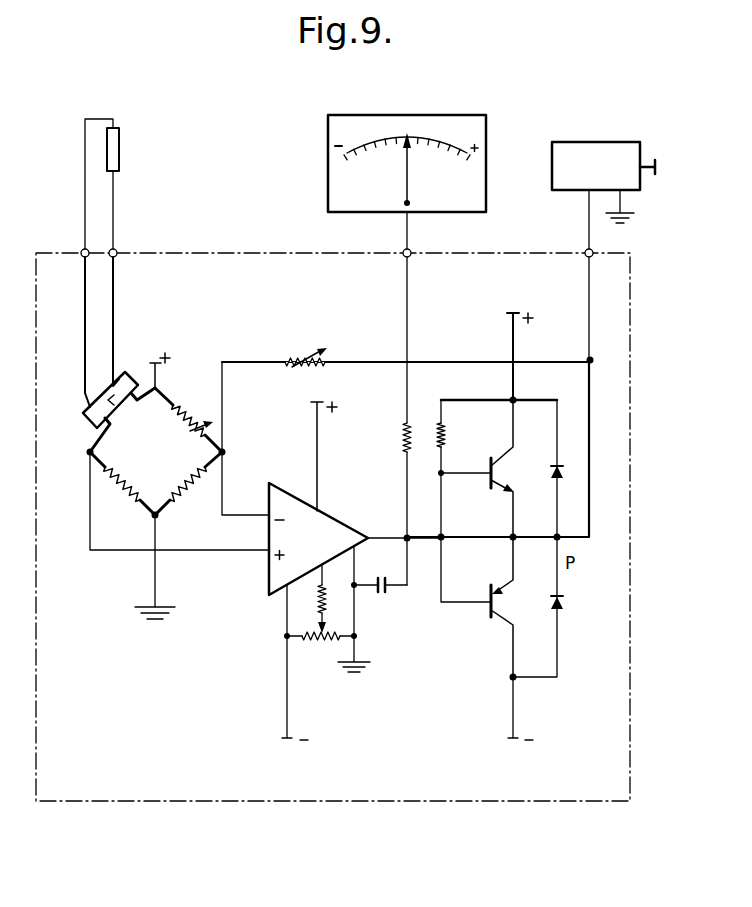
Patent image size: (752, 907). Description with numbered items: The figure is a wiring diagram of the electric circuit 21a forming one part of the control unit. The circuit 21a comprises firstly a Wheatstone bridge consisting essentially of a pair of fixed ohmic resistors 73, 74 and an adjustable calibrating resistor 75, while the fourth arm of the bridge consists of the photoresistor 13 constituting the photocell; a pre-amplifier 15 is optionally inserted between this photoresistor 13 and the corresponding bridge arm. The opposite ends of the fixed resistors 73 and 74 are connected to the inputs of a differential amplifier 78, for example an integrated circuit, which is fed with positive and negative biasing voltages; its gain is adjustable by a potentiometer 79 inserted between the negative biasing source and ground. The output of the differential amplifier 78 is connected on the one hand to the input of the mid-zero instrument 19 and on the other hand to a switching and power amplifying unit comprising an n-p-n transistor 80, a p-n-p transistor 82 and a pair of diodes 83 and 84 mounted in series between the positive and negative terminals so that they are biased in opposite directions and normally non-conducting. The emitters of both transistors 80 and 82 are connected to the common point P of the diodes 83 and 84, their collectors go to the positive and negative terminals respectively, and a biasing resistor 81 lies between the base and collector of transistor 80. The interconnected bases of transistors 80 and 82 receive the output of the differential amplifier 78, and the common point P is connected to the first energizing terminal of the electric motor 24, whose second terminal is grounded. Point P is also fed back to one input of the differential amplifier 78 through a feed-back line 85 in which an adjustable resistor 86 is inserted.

The photoresistor 13 is at (116, 145).
The mid-zero instrument 19 is at (457, 115).
The electric motor 24 is at (590, 150).
The electric circuit 21a is at (207, 252).
The pre-amplifier 15 is at (126, 375).
The fixed ohmic resistor 73 is at (110, 474).
The fixed ohmic resistor 74 is at (180, 493).
The adjustable calibrating resistor 75 is at (181, 406).
The differential amplifier 78 is at (333, 511).
The potentiometer 79 is at (317, 641).
The n-p-n transistor 80 is at (489, 480).
The biasing resistor 81 is at (447, 447).
The p-n-p transistor 82 is at (486, 607).
The diode 83 is at (551, 473).
The diode 84 is at (565, 602).
The feed-back line 85 is at (448, 361).
The adjustable resistor 86 is at (296, 360).